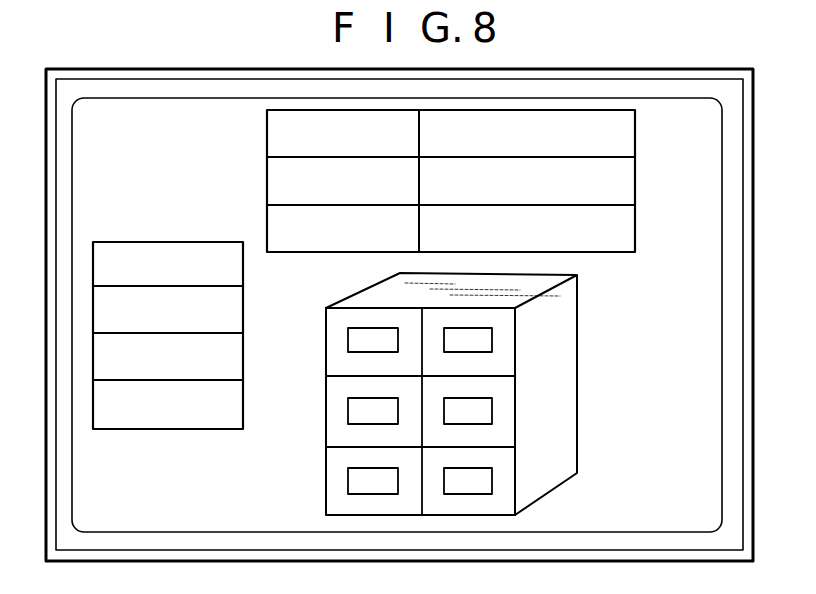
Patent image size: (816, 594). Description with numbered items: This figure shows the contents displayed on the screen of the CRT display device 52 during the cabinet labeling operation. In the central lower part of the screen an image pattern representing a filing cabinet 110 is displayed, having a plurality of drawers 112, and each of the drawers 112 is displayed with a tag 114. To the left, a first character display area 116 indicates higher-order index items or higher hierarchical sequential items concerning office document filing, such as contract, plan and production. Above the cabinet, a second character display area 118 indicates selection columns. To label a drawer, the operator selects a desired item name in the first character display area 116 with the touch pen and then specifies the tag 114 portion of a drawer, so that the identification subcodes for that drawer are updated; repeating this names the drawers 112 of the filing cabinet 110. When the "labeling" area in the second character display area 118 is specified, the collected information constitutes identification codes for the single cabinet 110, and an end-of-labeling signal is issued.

The CRT display device 52 is at (730, 562).
The filing cabinet 110 is at (457, 394).
The drawers 112 is at (332, 393).
The tags 114 is at (358, 413).
The first character display area 116 is at (195, 430).
The second character display area 118 is at (635, 239).